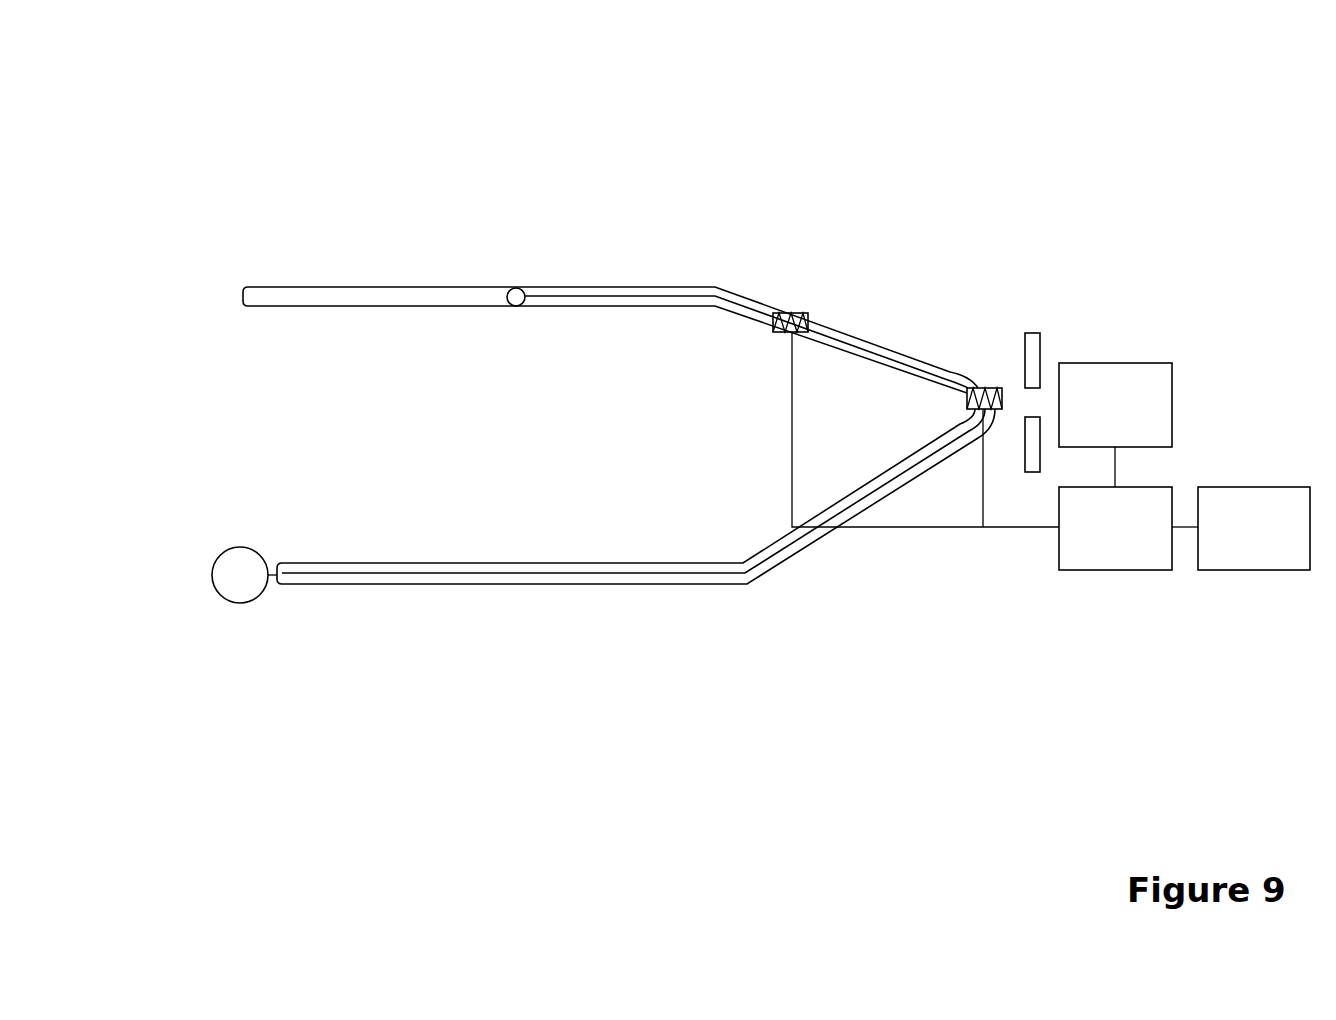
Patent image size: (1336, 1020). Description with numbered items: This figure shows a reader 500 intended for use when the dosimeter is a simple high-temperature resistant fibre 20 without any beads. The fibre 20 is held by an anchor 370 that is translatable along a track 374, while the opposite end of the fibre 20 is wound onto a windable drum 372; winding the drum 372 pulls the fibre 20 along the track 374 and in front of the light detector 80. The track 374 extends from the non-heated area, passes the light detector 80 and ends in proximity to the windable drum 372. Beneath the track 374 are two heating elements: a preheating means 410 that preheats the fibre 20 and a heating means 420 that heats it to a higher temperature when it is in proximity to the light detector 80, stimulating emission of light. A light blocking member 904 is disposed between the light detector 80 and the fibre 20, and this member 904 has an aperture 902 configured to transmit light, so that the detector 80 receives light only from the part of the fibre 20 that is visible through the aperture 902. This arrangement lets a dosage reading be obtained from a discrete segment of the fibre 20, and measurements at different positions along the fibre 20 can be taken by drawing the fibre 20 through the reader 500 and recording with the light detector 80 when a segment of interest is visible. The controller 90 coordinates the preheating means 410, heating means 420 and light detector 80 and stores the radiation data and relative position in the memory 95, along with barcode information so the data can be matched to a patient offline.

The reader 500 is at (322, 124).
The track 374 is at (302, 287).
The anchor 370 is at (513, 287).
The high-temperature fibre 20 is at (565, 288).
The preheating means 410 is at (812, 314).
The heating means 420 is at (996, 388).
The light blocking member 904 is at (1032, 333).
The aperture 902 is at (1040, 410).
The light detector 80 is at (1115, 363).
The controller 90 is at (1117, 570).
The memory 95 is at (1258, 570).
The windable drum 372 is at (212, 575).